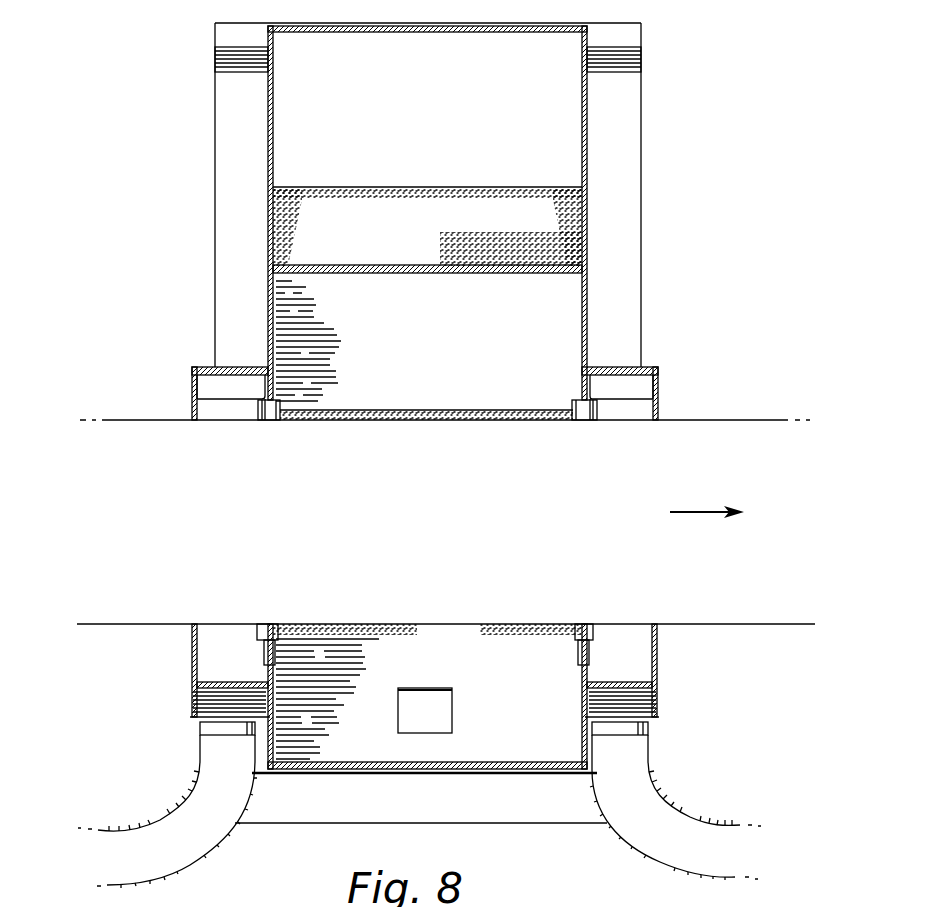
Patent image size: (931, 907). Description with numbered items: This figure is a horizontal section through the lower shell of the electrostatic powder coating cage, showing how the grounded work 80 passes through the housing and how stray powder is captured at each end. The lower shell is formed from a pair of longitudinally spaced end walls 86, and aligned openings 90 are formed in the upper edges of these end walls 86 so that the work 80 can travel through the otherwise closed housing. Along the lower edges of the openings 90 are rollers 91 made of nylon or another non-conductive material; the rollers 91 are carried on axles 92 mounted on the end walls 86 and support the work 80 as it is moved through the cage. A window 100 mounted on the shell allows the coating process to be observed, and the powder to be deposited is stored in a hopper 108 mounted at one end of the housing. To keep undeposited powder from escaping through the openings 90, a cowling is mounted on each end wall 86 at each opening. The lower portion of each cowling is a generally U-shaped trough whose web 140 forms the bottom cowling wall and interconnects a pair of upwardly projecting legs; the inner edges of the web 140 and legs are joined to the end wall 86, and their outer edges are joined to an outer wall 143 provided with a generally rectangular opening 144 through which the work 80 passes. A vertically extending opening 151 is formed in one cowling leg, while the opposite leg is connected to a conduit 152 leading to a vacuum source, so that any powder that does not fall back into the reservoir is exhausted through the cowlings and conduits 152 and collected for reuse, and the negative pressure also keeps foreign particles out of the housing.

The grounded work 80 is at (633, 476).
The end walls 86 is at (270, 295).
The aligned openings 90 is at (267, 393).
The rollers 91 is at (258, 636).
The axles 92 is at (197, 670).
The windows 100 is at (452, 715).
The hopper 108 is at (431, 108).
The web 140 is at (215, 410).
The outer wall 143 is at (187, 385).
The rectangular opening 144 is at (192, 634).
The vertically extending opening 151 is at (233, 367).
The conduit 152 is at (178, 803).